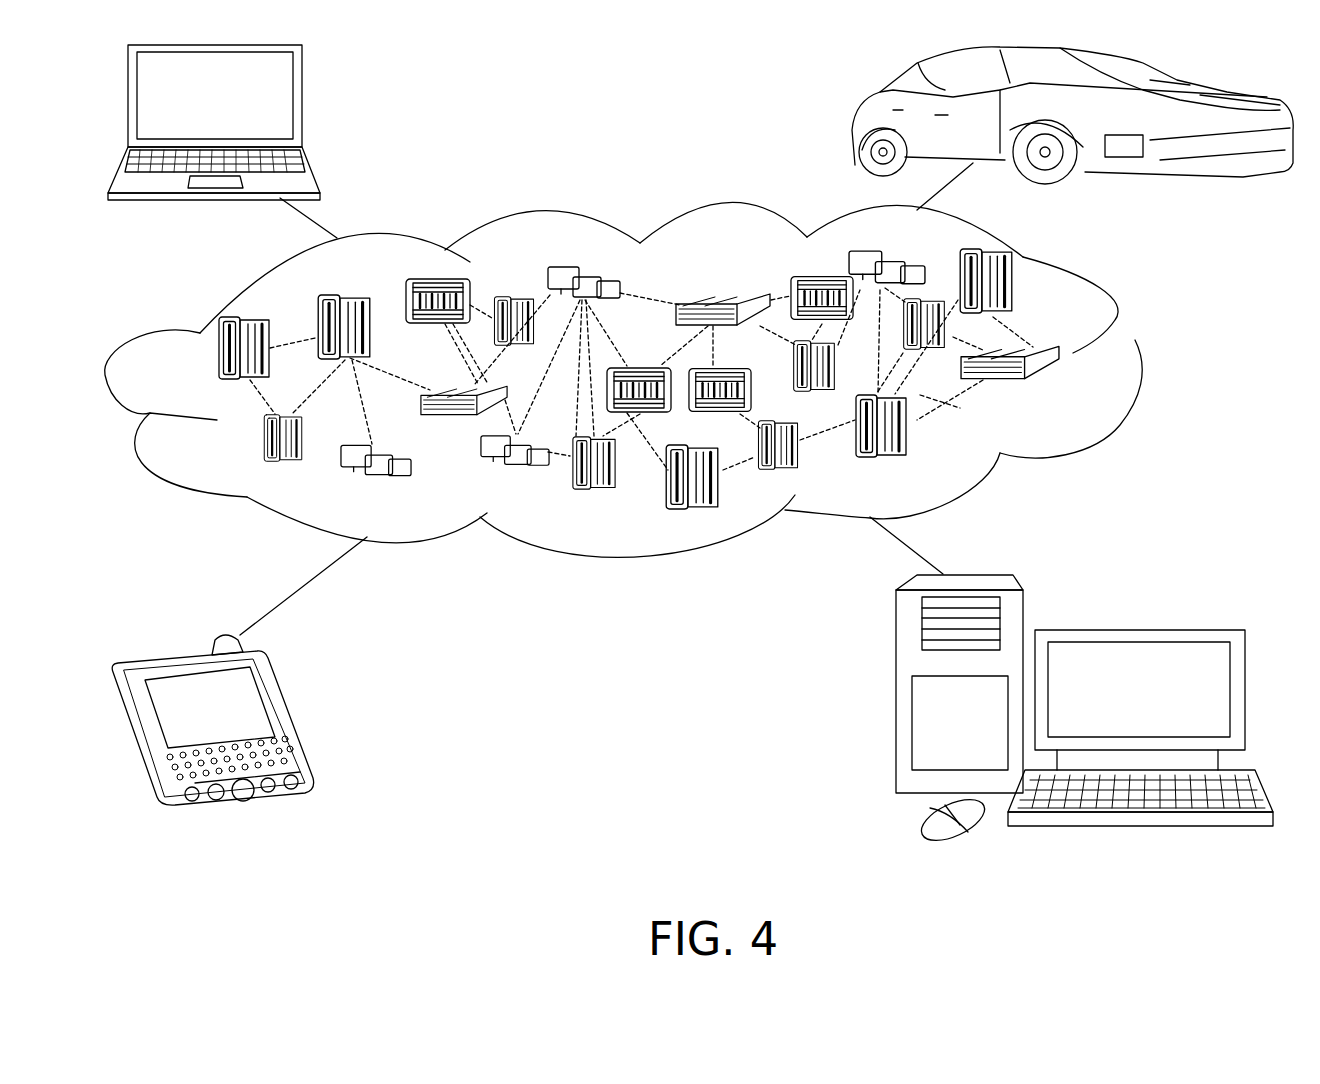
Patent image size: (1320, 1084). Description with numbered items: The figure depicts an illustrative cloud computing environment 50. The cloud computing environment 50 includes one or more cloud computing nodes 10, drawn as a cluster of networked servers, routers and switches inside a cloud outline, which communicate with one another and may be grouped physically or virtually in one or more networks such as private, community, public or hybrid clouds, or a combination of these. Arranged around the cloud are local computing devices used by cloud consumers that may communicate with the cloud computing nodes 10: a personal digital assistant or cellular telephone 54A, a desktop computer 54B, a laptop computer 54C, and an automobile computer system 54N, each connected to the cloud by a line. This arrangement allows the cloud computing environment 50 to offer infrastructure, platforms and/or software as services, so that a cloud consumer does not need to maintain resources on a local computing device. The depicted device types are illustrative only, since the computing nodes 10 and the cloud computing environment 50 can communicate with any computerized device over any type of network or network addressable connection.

The cloud computing environment 50 is at (1142, 352).
The cloud computing nodes 10 is at (1058, 388).
The personal digital assistant (PDA) or cellular telephone 54A is at (296, 718).
The desktop computer 54B is at (1140, 628).
The laptop computer 54C is at (303, 104).
The automobile computer system 54N is at (860, 118).